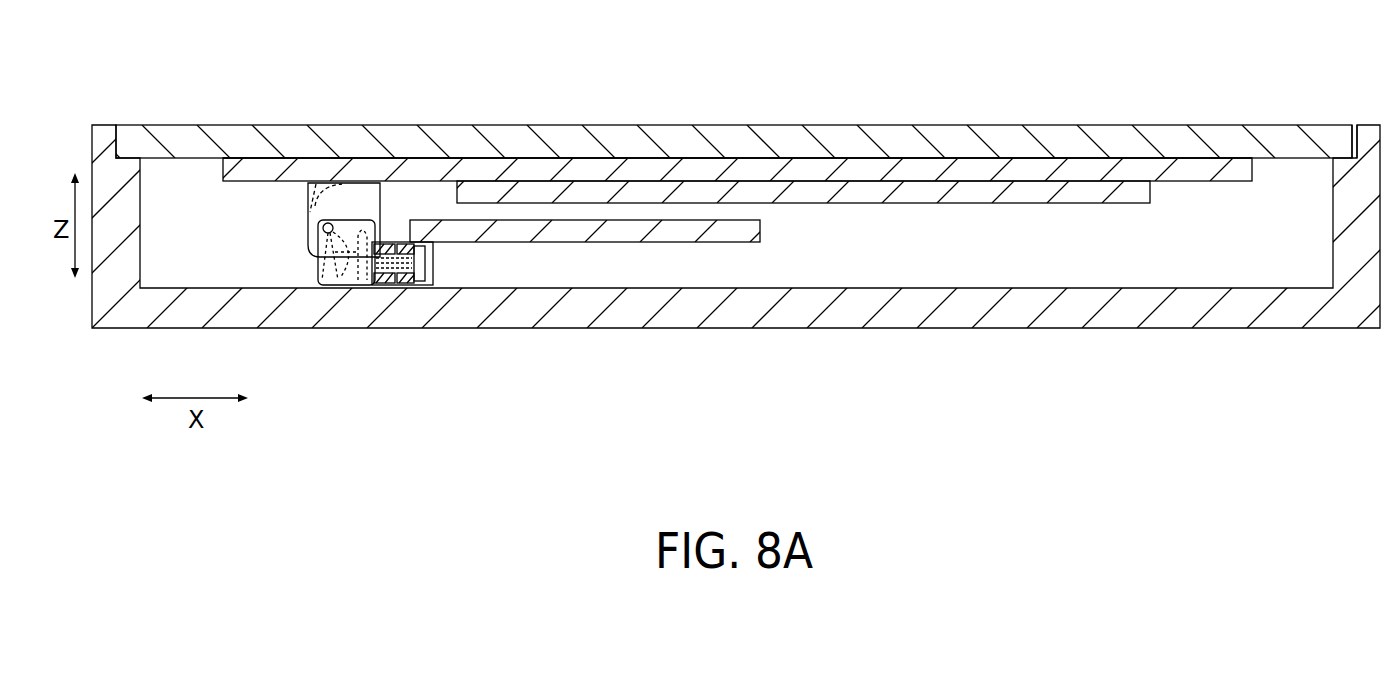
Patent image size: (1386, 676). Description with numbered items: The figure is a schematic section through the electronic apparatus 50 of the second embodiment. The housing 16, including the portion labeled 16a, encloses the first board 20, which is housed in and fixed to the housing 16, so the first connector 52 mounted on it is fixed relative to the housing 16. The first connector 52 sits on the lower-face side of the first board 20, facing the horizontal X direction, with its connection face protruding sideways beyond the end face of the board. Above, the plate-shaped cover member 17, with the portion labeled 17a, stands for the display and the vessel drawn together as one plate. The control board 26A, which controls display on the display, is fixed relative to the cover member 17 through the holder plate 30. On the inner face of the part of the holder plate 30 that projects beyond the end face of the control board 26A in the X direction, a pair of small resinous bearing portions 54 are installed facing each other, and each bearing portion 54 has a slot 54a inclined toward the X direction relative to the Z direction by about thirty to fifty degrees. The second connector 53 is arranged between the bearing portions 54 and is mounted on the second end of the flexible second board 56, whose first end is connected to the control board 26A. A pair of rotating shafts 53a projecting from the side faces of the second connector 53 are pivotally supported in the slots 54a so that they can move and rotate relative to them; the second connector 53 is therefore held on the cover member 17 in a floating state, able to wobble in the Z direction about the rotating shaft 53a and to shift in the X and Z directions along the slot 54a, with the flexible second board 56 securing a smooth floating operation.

The electronic apparatus 50 is at (140, 81).
The housing 16 is at (508, 332).
The slot of case 16a is at (1353, 124).
The cover member 17 is at (449, 119).
The inner surface of cover 17a is at (555, 162).
The holder plate 30 is at (870, 173).
The control board 26A is at (636, 190).
The first board 20 is at (605, 243).
The bearing portion 54 is at (352, 182).
The slot 54a is at (366, 283).
The second board 56 is at (316, 183).
The second connector 53 is at (397, 284).
The rotating shaft 53a is at (321, 283).
The first connector 52 is at (425, 286).